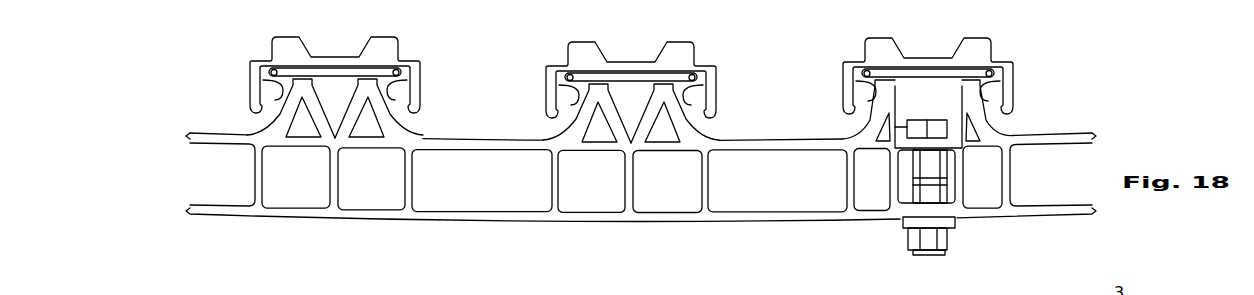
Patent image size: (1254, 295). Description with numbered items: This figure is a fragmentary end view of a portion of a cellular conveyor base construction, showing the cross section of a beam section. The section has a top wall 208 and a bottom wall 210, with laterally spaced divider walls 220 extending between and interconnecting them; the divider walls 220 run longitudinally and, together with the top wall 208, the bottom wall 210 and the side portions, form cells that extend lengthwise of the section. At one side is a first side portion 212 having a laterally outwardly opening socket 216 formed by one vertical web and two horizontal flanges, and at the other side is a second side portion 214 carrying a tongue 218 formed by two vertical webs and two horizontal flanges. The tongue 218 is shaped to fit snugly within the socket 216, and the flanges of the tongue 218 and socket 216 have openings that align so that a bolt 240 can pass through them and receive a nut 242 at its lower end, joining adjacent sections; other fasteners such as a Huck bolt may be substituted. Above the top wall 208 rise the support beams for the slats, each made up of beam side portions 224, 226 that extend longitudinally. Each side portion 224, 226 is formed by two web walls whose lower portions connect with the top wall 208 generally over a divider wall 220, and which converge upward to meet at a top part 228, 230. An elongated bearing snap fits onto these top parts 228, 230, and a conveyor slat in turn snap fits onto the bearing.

The top wall 208 is at (465, 139).
The bottom wall 210 is at (448, 222).
The first side portion 212 is at (967, 180).
The second side portion 214 is at (890, 175).
The socket 216 is at (953, 178).
The tongue 218 is at (943, 148).
The divider walls 220 is at (255, 181).
The beam side portion 224 is at (285, 118).
The beam side portion 226 is at (385, 118).
The top part 228 is at (291, 74).
The top part 230 is at (372, 73).
The bolt 240 is at (933, 166).
The nut 242 is at (945, 237).